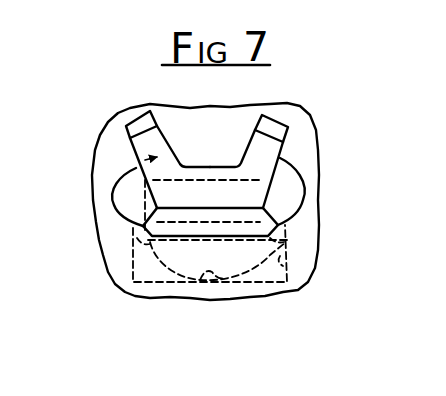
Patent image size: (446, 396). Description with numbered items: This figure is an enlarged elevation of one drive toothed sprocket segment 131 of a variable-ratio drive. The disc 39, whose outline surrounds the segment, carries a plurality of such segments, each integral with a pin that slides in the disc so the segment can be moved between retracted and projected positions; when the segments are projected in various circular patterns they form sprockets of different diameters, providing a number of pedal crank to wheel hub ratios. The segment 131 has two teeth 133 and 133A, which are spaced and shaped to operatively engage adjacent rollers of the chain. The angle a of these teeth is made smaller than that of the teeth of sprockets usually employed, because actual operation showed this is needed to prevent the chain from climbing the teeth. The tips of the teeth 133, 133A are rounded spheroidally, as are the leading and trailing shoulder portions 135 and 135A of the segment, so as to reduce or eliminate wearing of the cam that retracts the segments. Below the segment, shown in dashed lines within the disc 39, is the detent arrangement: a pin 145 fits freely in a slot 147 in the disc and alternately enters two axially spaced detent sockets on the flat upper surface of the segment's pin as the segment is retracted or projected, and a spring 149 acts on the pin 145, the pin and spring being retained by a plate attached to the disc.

The disc 39 is at (317, 145).
The drive toothed sprocket segment 131 is at (198, 173).
The tooth 133 is at (287, 124).
The tooth 133A is at (150, 110).
The leading shoulder portion 135 is at (303, 196).
The trailing shoulder portion 135A is at (115, 203).
The pin 145 is at (290, 240).
The slot 147 is at (282, 268).
The spring 149 is at (262, 280).
The angle of the teeth a is at (177, 147).